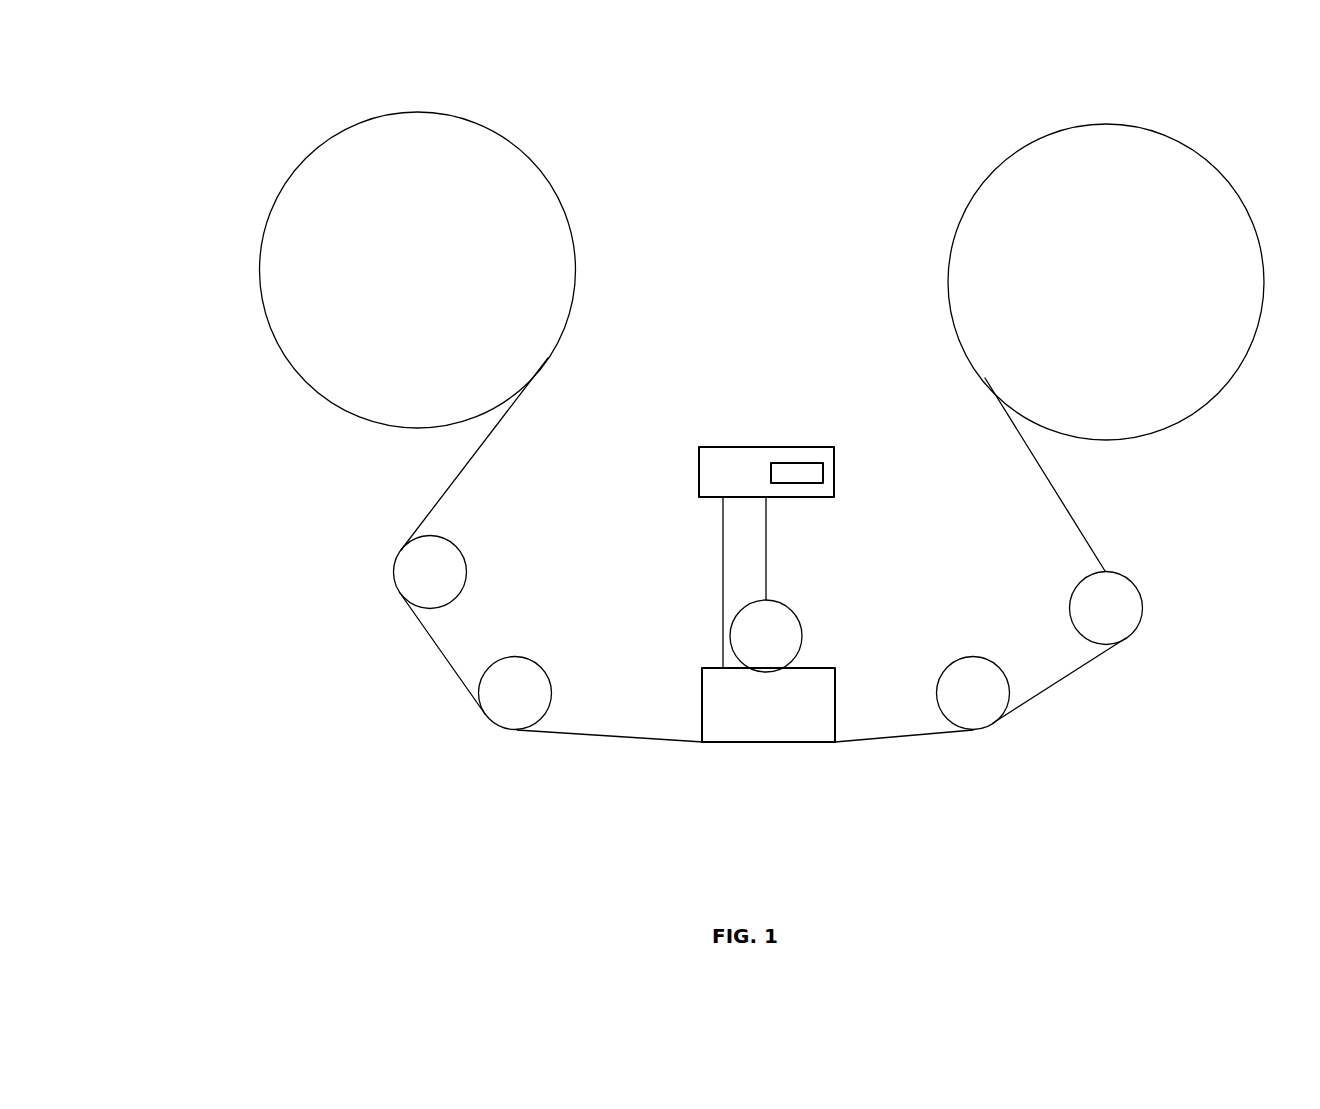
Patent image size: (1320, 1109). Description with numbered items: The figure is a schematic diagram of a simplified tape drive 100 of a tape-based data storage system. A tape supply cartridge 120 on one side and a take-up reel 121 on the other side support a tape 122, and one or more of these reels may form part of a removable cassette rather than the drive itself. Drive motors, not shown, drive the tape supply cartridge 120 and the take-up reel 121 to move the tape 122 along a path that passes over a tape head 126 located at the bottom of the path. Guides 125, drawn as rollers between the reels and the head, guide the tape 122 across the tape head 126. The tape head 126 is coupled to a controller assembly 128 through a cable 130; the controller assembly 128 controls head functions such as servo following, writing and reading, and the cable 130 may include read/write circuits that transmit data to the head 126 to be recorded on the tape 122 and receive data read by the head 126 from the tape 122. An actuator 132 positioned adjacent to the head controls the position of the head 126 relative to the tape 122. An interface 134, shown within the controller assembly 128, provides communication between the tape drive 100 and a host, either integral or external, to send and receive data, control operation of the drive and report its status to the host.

The tape drive 100 is at (372, 490).
The tape supply cartridge 120 is at (572, 240).
The take-up reel 121 is at (1205, 407).
The tape 122 is at (612, 737).
The guides 125 is at (515, 657).
The tape head 126 is at (835, 705).
The controller assembly 128 is at (765, 447).
The cable 130 is at (723, 630).
The actuator 132 is at (793, 608).
The interface 134 is at (811, 463).